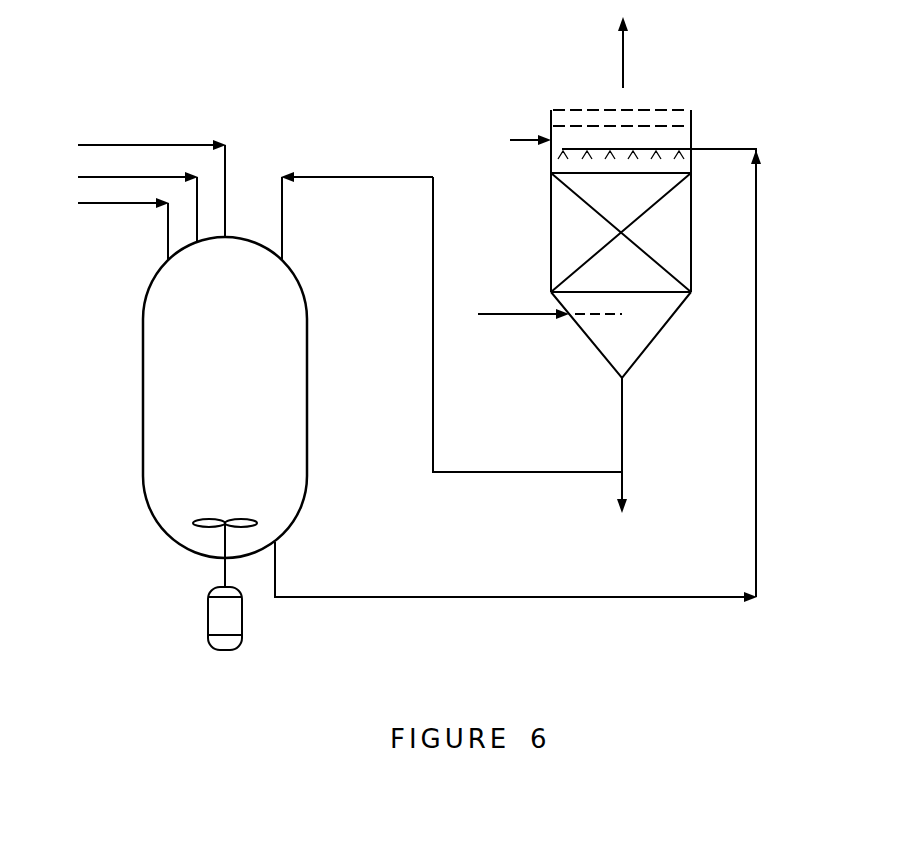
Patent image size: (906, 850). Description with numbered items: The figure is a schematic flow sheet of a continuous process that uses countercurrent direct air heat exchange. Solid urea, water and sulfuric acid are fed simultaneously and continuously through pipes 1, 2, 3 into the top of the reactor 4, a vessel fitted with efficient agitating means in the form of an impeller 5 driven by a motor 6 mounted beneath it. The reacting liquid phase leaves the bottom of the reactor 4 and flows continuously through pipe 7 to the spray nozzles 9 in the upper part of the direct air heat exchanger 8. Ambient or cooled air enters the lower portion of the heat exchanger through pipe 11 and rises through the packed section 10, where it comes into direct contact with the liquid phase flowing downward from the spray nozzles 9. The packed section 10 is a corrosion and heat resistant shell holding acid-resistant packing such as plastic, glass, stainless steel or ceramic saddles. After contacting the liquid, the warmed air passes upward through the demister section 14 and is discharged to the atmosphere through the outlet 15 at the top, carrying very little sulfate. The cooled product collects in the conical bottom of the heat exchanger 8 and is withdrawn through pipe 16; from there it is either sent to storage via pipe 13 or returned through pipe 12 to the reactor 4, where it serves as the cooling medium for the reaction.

The pipe 1 is at (140, 185).
The pipe 2 is at (126, 203).
The pipe 3 is at (112, 225).
The reactor 4 is at (143, 366).
The impeller 5 is at (212, 520).
The motor 6 is at (208, 623).
The pipe 7 is at (760, 331).
The direct air heat exchanger 8 is at (523, 138).
The spray nozzles 9 is at (625, 149).
The packed section 10 is at (551, 212).
The pipe 11 is at (518, 316).
The pipe 12 is at (342, 176).
The pipe 13 is at (625, 483).
The demister section 14 is at (670, 118).
The gas outlet 15 is at (623, 68).
The pipe 16 is at (622, 428).